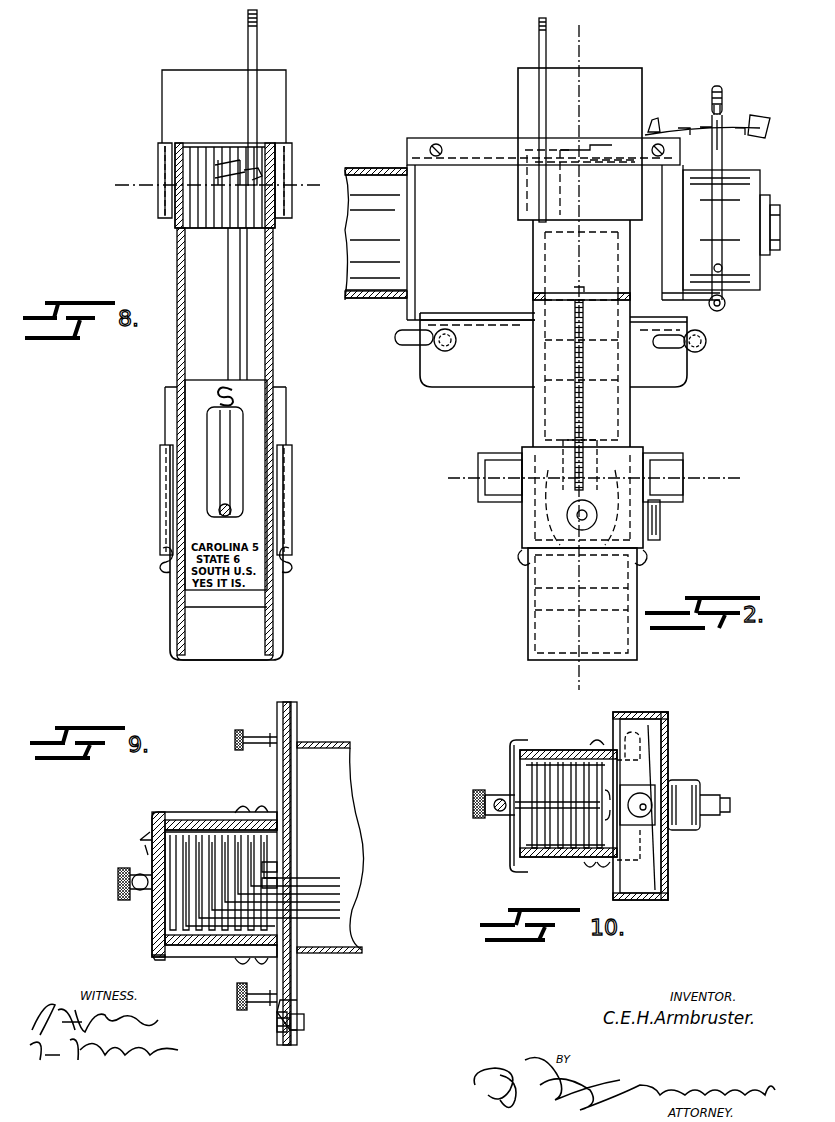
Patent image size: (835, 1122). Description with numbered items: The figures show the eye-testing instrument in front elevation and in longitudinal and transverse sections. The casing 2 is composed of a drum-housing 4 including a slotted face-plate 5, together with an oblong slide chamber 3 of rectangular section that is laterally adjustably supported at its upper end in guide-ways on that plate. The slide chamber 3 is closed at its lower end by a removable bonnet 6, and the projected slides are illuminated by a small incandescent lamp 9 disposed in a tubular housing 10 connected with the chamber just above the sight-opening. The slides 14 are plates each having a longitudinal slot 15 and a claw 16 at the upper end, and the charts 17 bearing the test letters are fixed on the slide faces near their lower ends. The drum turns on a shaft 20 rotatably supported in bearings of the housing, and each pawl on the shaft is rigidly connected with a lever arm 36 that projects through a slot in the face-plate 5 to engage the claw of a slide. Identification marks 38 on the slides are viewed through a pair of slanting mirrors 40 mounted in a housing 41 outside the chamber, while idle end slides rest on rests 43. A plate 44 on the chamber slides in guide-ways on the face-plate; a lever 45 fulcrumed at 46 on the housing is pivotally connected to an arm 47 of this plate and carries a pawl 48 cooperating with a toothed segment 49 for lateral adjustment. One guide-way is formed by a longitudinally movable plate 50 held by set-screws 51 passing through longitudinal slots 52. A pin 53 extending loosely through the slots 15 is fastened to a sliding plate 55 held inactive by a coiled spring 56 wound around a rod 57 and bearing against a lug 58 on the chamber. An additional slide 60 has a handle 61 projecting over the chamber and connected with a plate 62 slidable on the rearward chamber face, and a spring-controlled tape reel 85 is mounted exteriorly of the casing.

In FIG. 8, the casing 2 is at (176, 368).
In FIG. 2, the casing 2 is at (533, 408).
In FIG. 10, the casing 2 is at (555, 860).
In FIG. 8, the slide chamber 3 is at (274, 374).
In FIG. 2, the slide chamber 3 is at (506, 276).
In FIG. 10, the slide chamber 3 is at (546, 758).
In FIG. 2, the drum-housing 4 is at (475, 138).
In FIG. 9, the drum-housing 4 is at (345, 744).
In FIG. 9, the slotted face-plate 5 is at (298, 724).
In FIG. 8, the bonnet 6 is at (284, 593).
In FIG. 2, the bonnet 6 is at (530, 590).
In FIG. 8, the incandescent lamp 9 is at (217, 185).
In FIG. 10, the incandescent lamp 9 is at (660, 785).
In FIG. 2, the tubular housing 10 is at (590, 478).
In FIG. 10, the tubular housing 10 is at (708, 828).
In FIG. 8, the slides 14 is at (248, 352).
In FIG. 9, the slides 14 is at (226, 826).
In FIG. 10, the slides 14 is at (564, 760).
In FIG. 8, the longitudinal slot 15 is at (244, 432).
In FIG. 8, the claw 16 is at (258, 168).
In FIG. 8, the charts 17 is at (162, 562).
In FIG. 2, the shaft 20 is at (778, 210).
In FIG. 8, the lever arm 36 is at (244, 181).
In FIG. 9, the lever arm 36 is at (322, 882).
In FIG. 8, the identification marks 38 is at (216, 397).
In FIG. 2, the slanting mirrors 40 is at (498, 490).
In FIG. 10, the slanting mirrors 40 is at (620, 740).
In FIG. 2, the mirror housing 41 is at (684, 458).
In FIG. 10, the mirror housing 41 is at (665, 726).
In FIG. 9, the rests 43 is at (282, 868).
In FIG. 2, the plate 44 is at (440, 242).
In FIG. 9, the plate 44 is at (282, 774).
In FIG. 2, the lever 45 is at (712, 100).
In FIG. 9, the lever 45 is at (280, 1032).
In FIG. 2, the fulcrum 46 is at (725, 278).
In FIG. 2, the arm 47 is at (726, 308).
In FIG. 9, the arm 47 is at (300, 1000).
In FIG. 2, the pawl 48 is at (723, 90).
In FIG. 2, the toothed segment 49 is at (770, 112).
In FIG. 9, the toothed segment 49 is at (305, 1025).
In FIG. 2, the longitudinally movable plate 50 is at (490, 378).
In FIG. 2, the set-screws 51 is at (440, 346).
In FIG. 9, the set-screws 51 is at (243, 728).
In FIG. 2, the longitudinal slots 52 is at (400, 332).
In FIG. 8, the pin 53 is at (231, 508).
In FIG. 2, the pin 53 is at (568, 520).
In FIG. 9, the pin 53 is at (118, 890).
In FIG. 10, the pin 53 is at (473, 800).
In FIG. 8, the plate 55 is at (293, 456).
In FIG. 2, the plate 55 is at (620, 458).
In FIG. 2, the coiled spring 56 is at (590, 403).
In FIG. 2, the rod 57 is at (590, 432).
In FIG. 10, the rod 57 is at (500, 812).
In FIG. 2, the lug 58 is at (602, 288).
In FIG. 8, the slide 60 is at (275, 284).
In FIG. 9, the slide 60 is at (252, 822).
In FIG. 10, the slide 60 is at (605, 860).
In FIG. 8, the handle 61 is at (258, 106).
In FIG. 2, the handle 61 is at (538, 38).
In FIG. 8, the plate 62 is at (285, 140).
In FIG. 2, the plate 62 is at (592, 140).
In FIG. 9, the plate 62 is at (162, 960).
In FIG. 2, the measuring tape reel 85 is at (662, 530).